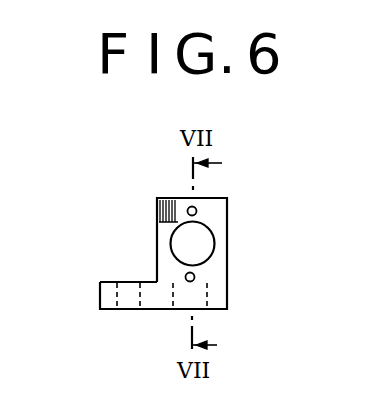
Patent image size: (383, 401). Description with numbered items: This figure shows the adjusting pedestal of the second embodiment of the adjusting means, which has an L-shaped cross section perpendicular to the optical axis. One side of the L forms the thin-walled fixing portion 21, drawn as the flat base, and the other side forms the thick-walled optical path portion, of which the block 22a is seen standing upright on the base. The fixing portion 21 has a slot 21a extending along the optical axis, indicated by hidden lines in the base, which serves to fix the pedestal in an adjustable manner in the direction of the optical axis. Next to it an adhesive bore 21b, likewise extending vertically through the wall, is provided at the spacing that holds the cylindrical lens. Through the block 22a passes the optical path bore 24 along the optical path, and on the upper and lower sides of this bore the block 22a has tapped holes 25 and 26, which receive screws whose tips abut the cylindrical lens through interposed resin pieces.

The fixing portion 21 is at (100, 286).
The slot 21a is at (125, 312).
The adhesive bore 21b is at (203, 314).
The block 22a is at (157, 230).
The optical path bore 24 is at (215, 243).
The tapped hole 25 is at (197, 211).
The tapped hole 26 is at (195, 276).